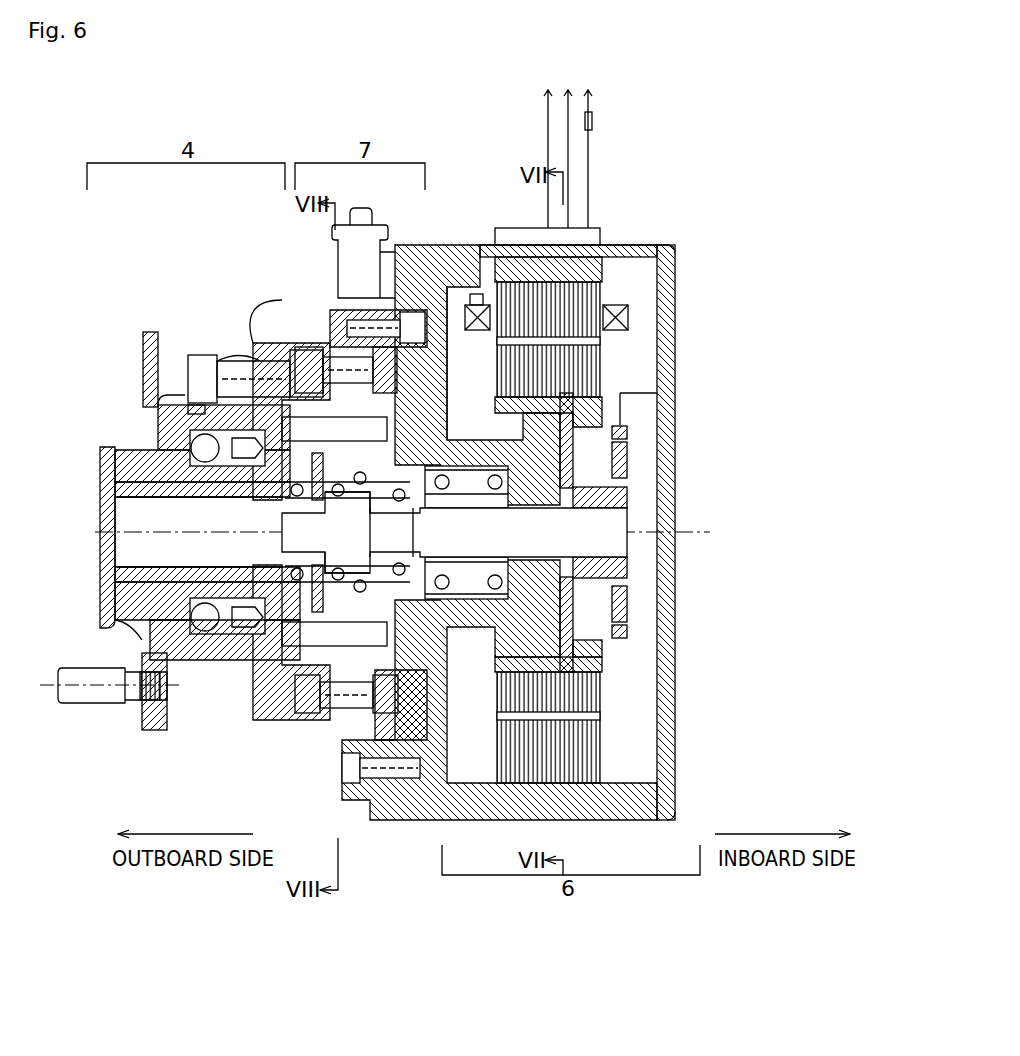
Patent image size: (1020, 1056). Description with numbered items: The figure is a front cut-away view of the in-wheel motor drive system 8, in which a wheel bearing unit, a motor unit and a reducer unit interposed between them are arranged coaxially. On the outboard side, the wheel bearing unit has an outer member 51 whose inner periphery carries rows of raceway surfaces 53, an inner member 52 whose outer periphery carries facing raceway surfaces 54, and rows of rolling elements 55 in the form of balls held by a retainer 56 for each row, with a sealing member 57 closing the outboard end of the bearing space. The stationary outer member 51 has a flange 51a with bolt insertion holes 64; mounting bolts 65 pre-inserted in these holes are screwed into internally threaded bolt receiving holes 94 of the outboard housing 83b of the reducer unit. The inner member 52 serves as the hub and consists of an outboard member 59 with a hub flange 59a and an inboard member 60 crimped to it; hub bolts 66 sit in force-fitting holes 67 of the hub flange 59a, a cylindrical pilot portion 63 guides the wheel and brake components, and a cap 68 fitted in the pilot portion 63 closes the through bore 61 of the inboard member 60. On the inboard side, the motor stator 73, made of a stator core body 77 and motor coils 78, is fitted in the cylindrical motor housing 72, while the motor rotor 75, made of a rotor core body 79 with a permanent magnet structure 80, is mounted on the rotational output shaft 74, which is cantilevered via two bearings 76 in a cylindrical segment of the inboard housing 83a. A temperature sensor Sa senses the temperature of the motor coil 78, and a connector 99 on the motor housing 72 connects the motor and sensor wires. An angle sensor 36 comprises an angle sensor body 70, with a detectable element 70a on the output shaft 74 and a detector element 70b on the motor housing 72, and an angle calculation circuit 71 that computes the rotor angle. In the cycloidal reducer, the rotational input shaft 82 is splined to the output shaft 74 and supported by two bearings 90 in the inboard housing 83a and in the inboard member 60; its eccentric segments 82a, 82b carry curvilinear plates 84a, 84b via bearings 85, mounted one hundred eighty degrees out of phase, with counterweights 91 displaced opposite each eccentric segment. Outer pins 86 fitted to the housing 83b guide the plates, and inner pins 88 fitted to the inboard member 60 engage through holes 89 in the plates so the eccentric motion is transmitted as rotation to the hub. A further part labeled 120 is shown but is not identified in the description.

The in-wheel motor drive system 8 is at (448, 106).
The angle sensor 36 is at (770, 322).
The outer member 51 is at (195, 406).
The flange 51a is at (242, 350).
The inner member 52 is at (58, 460).
The raceway surfaces 53 is at (215, 630).
The raceway surfaces 54 is at (217, 606).
The rolling elements 55 is at (228, 460).
The retainer 56 is at (155, 643).
The sealing member 57 is at (148, 617).
The outboard member 59 is at (150, 466).
The hub flange 59a is at (150, 333).
The inboard member 60 is at (170, 485).
The through bore 61 is at (157, 563).
The pilot portion 63 is at (103, 447).
The bolt insertion holes 64 is at (188, 342).
The mounting bolts 65 is at (205, 355).
The hub bolts 66 is at (92, 693).
The force-fitting holes 67 is at (140, 700).
The cap 68 is at (96, 568).
The angle sensor body 70 is at (730, 358).
The detectable element 70a is at (628, 466).
The detector element 70b is at (628, 428).
The angle calculation circuit 71 is at (592, 121).
The motor housing 72 is at (468, 303).
The motor stator 73 is at (681, 172).
The rotational output shaft 74 is at (662, 600).
The motor rotor 75 is at (490, 397).
The bearings 76 is at (470, 605).
The core body 77 is at (620, 245).
The motor coils 78 is at (643, 245).
The core body 79 is at (507, 367).
The permanent magnet structure 80 is at (507, 347).
The rotational input shaft 82 is at (578, 610).
The eccentric segment 82a is at (362, 518).
The eccentric segment 82b is at (337, 556).
The inboard housing 83a is at (433, 295).
The outboard housing 83b is at (307, 343).
The curvilinear plate 84a is at (360, 677).
The curvilinear plate 84b is at (338, 682).
The bearings 85 is at (300, 590).
The outer pins 86 is at (338, 308).
The inner pins 88 is at (305, 372).
The through holes 89 is at (347, 362).
The bearings 90 is at (240, 670).
The counterweights 91 is at (318, 470).
The bolt receiving holes 94 is at (253, 365).
The connector 99 is at (525, 230).
The carrier 120 is at (186, 352).
The temperature sensor Sa is at (476, 293).